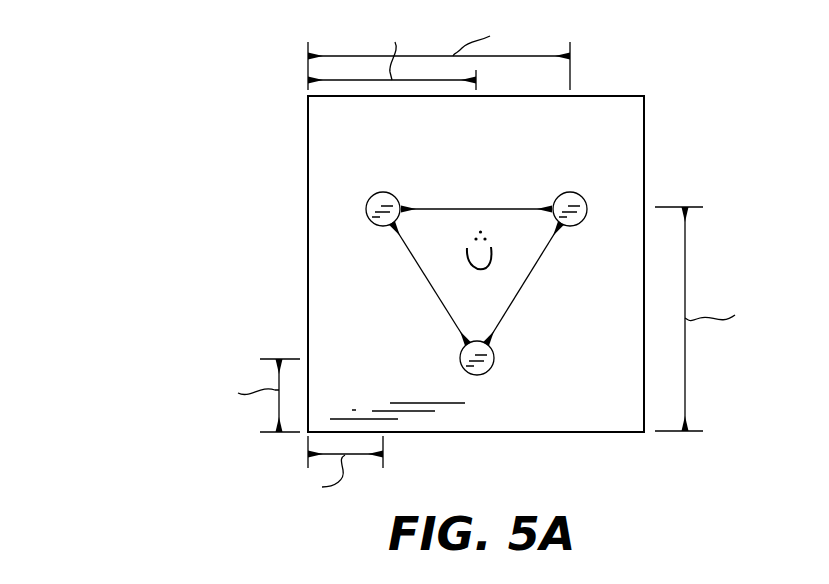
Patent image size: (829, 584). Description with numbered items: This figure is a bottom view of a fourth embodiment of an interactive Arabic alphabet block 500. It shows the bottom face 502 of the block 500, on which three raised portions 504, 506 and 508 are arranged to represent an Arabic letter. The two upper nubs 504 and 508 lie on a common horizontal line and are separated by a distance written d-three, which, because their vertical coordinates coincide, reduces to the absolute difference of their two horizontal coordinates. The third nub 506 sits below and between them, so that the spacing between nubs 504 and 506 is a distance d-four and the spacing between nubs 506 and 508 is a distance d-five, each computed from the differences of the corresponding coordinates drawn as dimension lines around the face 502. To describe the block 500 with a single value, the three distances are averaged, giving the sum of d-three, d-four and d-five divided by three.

The interactive Arabic alphabet block 500 is at (129, 99).
The bottom face 502 is at (615, 391).
The raised portion 504 is at (366, 200).
The raised portion 506 is at (459, 366).
The raised portion 508 is at (582, 197).